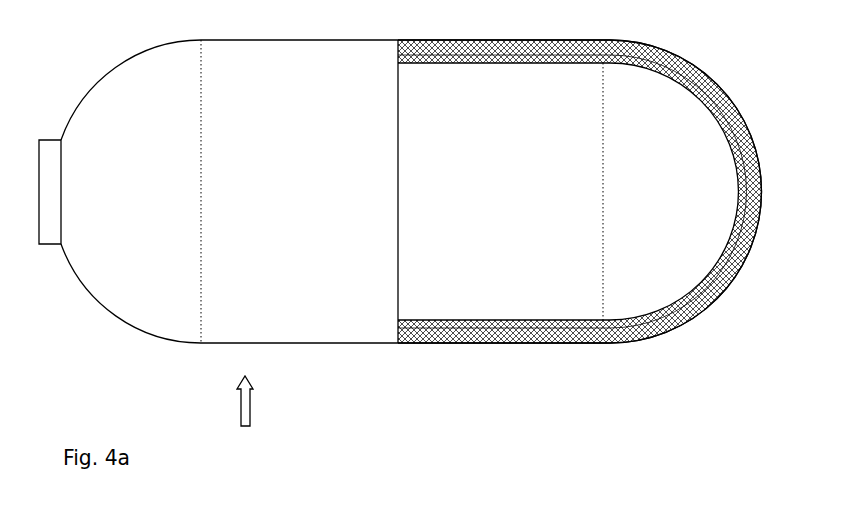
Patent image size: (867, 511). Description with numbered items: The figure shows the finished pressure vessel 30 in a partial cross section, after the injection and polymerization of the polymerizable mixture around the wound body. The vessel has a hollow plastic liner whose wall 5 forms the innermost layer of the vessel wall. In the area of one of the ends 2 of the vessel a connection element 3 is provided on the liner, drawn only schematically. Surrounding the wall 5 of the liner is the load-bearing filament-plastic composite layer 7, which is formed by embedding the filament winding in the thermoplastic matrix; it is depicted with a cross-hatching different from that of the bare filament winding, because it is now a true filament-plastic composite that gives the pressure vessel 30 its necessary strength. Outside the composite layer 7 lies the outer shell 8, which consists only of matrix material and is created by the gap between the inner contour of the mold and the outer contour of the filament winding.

The end of the vessel 2 is at (105, 100).
The connection element 3 is at (45, 230).
The wall of the liner 5 is at (417, 322).
The filament-plastic composite layer 7 is at (460, 332).
The outer shell 8 is at (508, 343).
The pressure vessel 30 is at (245, 415).